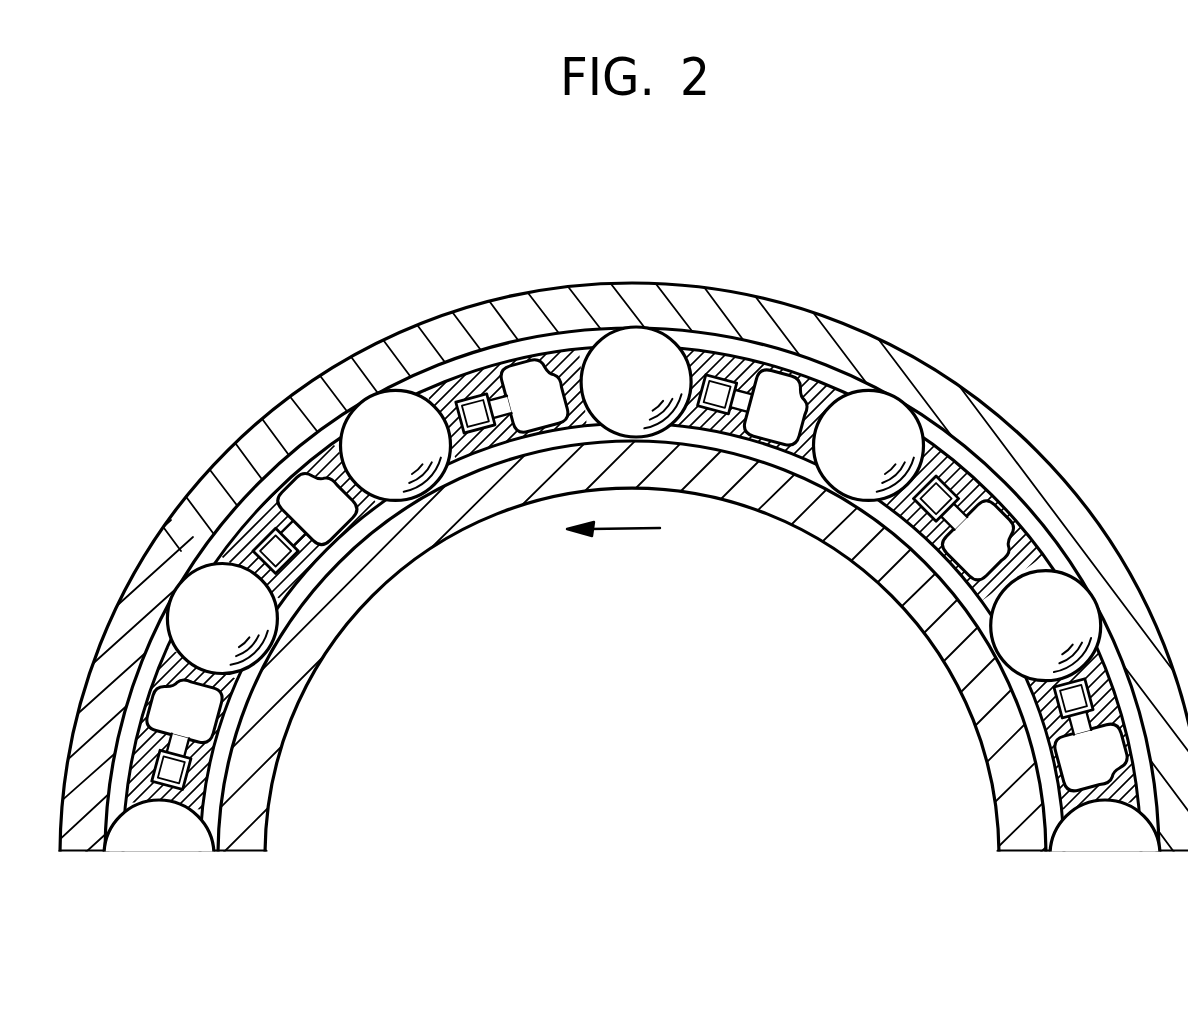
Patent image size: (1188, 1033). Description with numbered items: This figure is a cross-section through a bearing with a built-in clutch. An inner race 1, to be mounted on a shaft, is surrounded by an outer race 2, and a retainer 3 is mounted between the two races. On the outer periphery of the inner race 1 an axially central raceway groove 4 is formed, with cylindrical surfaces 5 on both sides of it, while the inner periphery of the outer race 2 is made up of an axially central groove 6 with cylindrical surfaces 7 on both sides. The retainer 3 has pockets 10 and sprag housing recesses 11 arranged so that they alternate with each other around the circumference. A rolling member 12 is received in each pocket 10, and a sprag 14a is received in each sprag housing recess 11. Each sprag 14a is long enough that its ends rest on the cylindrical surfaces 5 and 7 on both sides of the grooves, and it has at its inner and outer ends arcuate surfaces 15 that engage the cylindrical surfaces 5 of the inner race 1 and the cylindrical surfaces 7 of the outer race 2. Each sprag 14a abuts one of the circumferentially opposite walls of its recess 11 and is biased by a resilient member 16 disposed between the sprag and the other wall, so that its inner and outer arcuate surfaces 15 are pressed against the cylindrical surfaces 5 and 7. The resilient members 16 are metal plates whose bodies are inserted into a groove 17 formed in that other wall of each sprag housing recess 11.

The inner race 1 is at (632, 646).
The outer race 2 is at (507, 303).
The retainer 3 is at (445, 375).
The raceway groove 4 is at (853, 563).
The cylindrical surfaces 5 is at (910, 617).
The groove 6 is at (587, 325).
The cylindrical surfaces 7 is at (758, 370).
The pockets 10 is at (675, 336).
The sprag housing recesses 11 is at (808, 388).
The rolling member 12 is at (662, 408).
The sprag 14a is at (492, 516).
The arcuate surfaces 15 is at (262, 477).
The resilient member 16 is at (253, 512).
The groove 17 is at (236, 540).